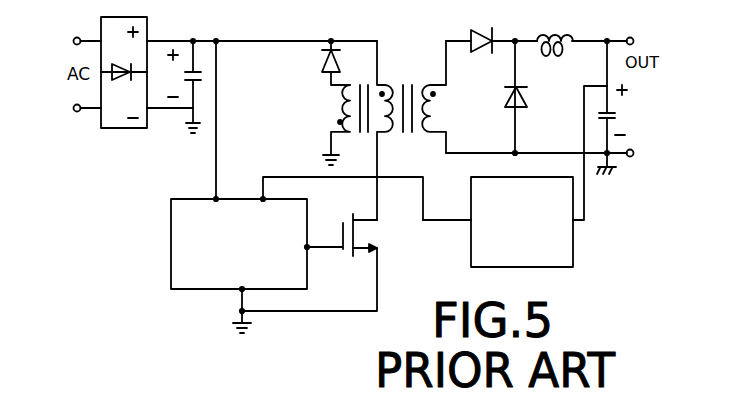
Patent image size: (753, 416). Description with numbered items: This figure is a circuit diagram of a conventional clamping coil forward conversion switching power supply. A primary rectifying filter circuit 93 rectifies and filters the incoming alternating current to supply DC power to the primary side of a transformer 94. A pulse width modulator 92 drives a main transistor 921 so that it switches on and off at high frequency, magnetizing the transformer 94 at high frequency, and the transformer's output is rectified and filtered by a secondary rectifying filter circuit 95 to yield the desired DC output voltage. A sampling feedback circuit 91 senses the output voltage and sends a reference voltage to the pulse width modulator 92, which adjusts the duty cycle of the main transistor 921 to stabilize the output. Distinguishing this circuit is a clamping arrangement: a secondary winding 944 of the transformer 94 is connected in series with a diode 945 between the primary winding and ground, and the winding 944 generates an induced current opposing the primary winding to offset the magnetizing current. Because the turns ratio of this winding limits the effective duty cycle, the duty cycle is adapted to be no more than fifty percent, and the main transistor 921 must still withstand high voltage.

The sampling feedback circuit 91 is at (572, 241).
The pulse width modulator 92 is at (172, 263).
The main transistor 921 is at (380, 244).
The primary rectifying filter circuit 93 is at (172, 31).
The transformer 94 is at (407, 76).
The secondary winding 944 is at (340, 108).
The diode 945 is at (338, 52).
The secondary rectifying filter circuit 95 is at (545, 29).